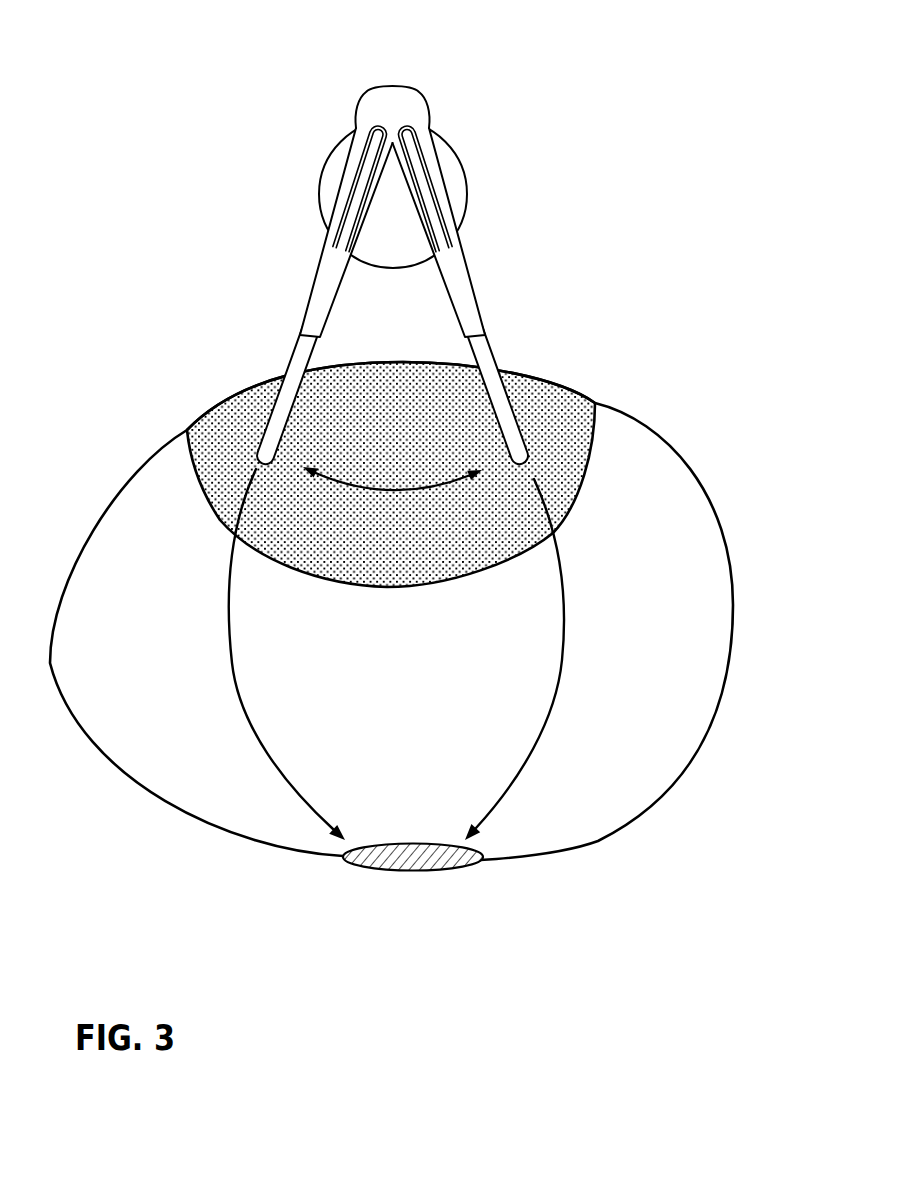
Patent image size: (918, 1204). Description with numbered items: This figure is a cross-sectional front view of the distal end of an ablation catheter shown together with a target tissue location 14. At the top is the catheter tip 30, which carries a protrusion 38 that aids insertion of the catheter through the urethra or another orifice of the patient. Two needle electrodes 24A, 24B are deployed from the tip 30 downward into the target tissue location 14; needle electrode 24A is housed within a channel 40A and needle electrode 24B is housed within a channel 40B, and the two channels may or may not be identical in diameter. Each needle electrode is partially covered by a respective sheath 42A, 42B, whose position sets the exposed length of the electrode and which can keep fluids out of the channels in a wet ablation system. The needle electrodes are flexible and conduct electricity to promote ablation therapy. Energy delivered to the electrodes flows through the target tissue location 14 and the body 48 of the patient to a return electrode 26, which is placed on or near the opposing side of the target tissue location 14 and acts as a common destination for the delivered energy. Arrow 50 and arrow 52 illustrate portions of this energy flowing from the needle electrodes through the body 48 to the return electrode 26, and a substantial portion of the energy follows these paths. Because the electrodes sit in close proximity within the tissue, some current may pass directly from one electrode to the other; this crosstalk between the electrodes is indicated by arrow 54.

The target tissue location 14 is at (213, 469).
The needle electrode 24A is at (288, 377).
The needle electrode 24B is at (490, 358).
The return electrode 26 is at (368, 860).
The tip 30 is at (462, 153).
The protrusion 38 is at (392, 100).
The channel 40A is at (328, 237).
The channel 40B is at (453, 232).
The sheath 42A is at (313, 288).
The sheath 42B is at (467, 282).
The body 48 is at (171, 784).
The arrow 50 is at (270, 654).
The arrow 52 is at (532, 659).
The arrow 54 is at (392, 492).